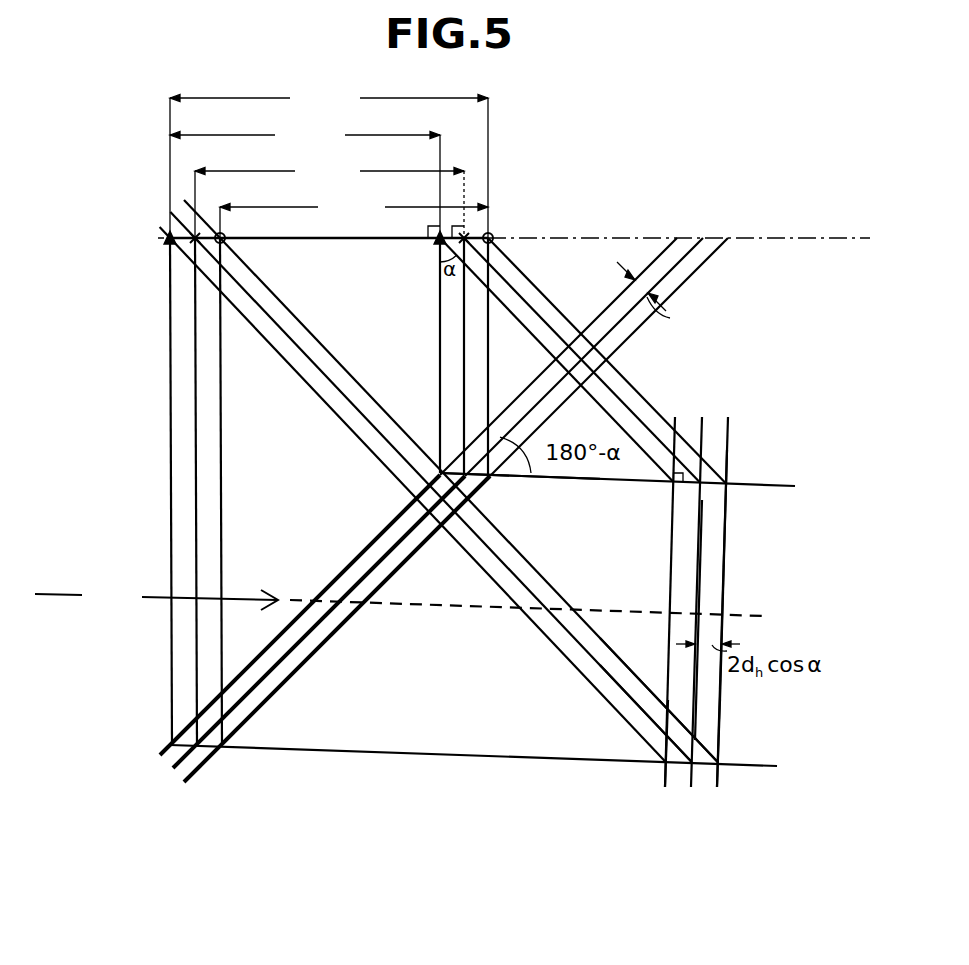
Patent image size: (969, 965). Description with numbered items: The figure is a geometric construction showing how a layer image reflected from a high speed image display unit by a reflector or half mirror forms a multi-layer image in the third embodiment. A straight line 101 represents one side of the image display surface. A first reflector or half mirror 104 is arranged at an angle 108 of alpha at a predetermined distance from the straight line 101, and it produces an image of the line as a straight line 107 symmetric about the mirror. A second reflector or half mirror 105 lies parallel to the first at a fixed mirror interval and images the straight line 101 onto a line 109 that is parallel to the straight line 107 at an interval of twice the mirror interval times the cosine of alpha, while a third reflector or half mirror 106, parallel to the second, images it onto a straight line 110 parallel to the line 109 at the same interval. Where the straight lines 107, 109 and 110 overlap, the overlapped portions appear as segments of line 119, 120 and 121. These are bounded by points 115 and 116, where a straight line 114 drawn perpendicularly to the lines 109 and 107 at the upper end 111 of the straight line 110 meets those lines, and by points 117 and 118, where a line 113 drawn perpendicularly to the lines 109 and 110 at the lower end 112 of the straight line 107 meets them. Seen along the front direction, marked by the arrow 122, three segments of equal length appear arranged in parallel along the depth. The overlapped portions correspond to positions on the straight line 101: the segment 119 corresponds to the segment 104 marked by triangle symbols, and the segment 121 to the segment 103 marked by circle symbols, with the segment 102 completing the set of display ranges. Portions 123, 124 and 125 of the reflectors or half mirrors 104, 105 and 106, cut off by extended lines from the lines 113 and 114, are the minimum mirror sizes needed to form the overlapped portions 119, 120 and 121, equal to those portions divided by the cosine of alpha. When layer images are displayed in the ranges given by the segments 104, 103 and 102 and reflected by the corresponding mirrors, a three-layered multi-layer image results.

The straight line 101 is at (329, 160).
The segment 102 is at (354, 215).
The segment 103 is at (329, 197).
The first reflector or half mirror 104 is at (650, 262).
The second reflector or half mirror 105 is at (692, 250).
The third reflector or half mirror 106 is at (712, 256).
The straight line 107 is at (678, 415).
The angle α 108 is at (611, 302).
The line 109 is at (705, 437).
The straight line 110 is at (718, 782).
The upper end of the straight line 110 111 is at (902, 490).
The lower end of the straight line 107 112 is at (662, 770).
The line 113 is at (430, 756).
The straight line 114 is at (563, 483).
The point 115 is at (727, 466).
The point 116 is at (673, 484).
The point 117 is at (702, 755).
The point 118 is at (712, 737).
The segment of line 119 is at (670, 587).
The segment of line 120 is at (703, 533).
The segment of line 121 is at (727, 582).
The incident direction 122 is at (399, 598).
The portion of the reflector or half mirror 123 is at (243, 678).
The portion of the reflector or half mirror 124 is at (302, 645).
The portion of the reflector or half mirror 125 is at (347, 623).